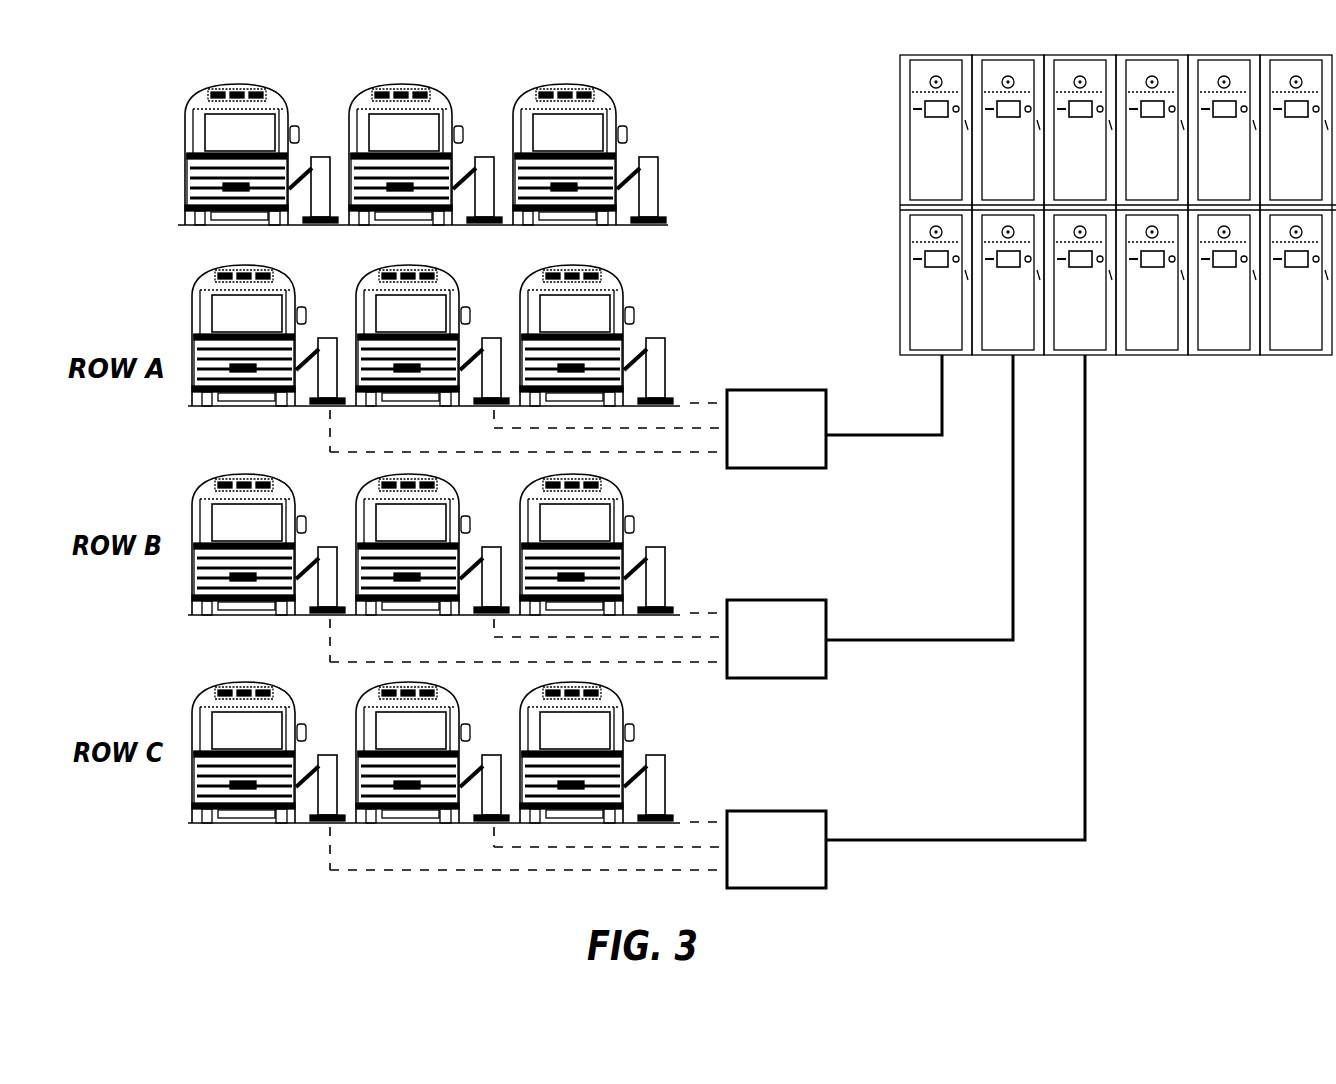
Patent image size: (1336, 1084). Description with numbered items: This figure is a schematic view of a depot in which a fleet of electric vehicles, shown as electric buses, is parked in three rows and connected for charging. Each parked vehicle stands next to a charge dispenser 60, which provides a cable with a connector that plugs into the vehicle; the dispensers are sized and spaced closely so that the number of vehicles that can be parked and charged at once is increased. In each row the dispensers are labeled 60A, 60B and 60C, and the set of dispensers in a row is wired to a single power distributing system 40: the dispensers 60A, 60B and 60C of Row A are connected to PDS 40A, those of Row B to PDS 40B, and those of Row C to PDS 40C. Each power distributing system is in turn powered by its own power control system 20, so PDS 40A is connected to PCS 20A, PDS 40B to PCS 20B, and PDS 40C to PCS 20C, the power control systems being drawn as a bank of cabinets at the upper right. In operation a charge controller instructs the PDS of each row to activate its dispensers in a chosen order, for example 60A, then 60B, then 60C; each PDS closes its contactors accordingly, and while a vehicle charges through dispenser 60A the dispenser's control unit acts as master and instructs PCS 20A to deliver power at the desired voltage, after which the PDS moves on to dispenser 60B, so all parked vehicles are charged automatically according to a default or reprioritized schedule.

The power control system 20 is at (888, 113).
The power control system 20A is at (955, 323).
The power control system 20B is at (1027, 323).
The power control system 20C is at (1099, 323).
The power distributing system 40 is at (778, 376).
The power distributing system 40A is at (754, 439).
The power distributing system 40B is at (754, 649).
The power distributing system 40C is at (754, 858).
The charge dispenser 60 is at (667, 135).
The charge dispenser 60A is at (333, 337).
The charge dispenser 60B is at (497, 337).
The charge dispenser 60C is at (662, 337).